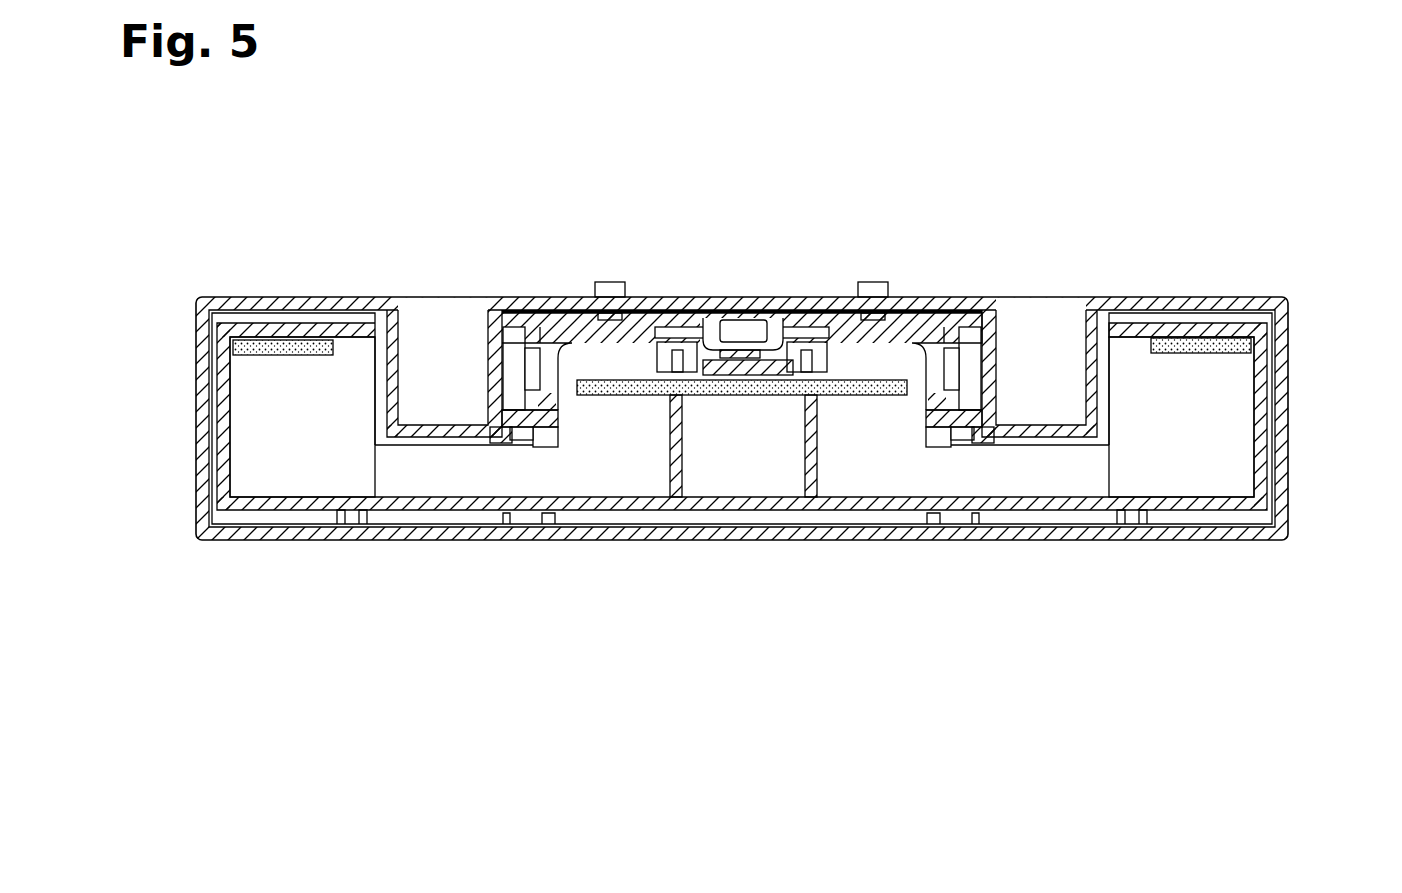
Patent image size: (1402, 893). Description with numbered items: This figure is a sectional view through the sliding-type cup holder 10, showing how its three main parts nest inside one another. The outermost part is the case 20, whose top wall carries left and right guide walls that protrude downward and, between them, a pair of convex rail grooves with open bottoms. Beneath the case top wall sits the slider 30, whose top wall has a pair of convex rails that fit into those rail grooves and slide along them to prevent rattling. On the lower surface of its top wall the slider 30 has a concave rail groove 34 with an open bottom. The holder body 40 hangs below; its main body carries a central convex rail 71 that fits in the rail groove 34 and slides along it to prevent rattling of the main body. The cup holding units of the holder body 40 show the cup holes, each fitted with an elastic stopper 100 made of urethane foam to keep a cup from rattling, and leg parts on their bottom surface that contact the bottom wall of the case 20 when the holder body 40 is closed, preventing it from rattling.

The cup holder 10 is at (336, 148).
The case 20 is at (1285, 510).
The slider 30 is at (525, 310).
The rail groove 34 is at (725, 311).
The holder body 40 is at (1260, 474).
The rail 71 is at (735, 360).
The stopper 100 is at (778, 396).